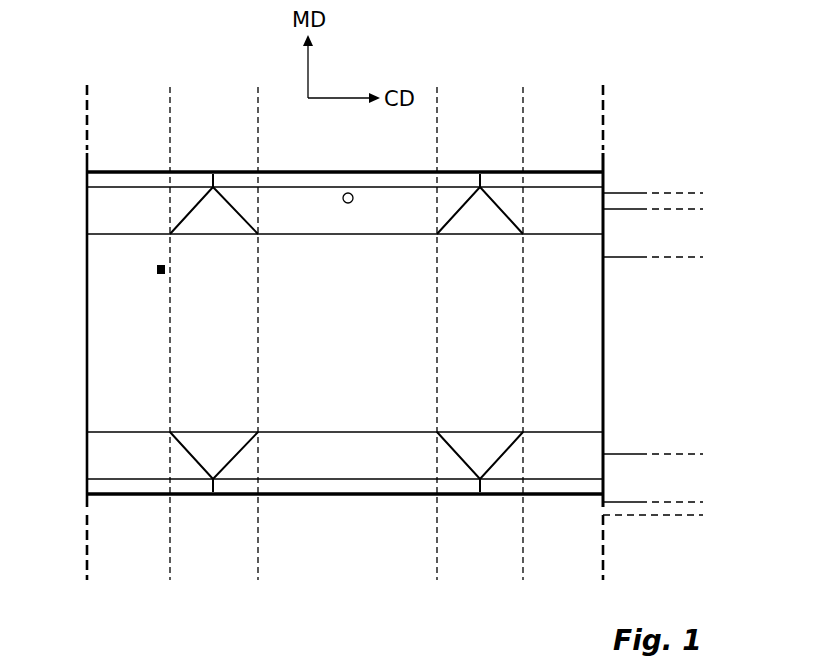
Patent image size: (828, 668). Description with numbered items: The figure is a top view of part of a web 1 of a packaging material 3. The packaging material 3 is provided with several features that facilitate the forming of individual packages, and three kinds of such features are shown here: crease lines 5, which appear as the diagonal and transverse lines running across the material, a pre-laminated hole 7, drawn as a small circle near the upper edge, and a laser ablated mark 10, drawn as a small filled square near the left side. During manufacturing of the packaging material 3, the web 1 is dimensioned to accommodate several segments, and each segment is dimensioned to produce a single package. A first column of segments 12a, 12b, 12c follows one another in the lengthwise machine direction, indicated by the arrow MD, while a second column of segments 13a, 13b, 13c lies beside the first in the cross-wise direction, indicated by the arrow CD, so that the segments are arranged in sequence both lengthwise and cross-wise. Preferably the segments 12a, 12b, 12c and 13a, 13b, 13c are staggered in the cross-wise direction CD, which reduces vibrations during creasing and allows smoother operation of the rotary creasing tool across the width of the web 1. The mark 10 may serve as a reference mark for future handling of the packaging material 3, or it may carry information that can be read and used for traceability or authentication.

The web 1 is at (652, 101).
The packaging material 3 is at (112, 143).
The crease lines 5 is at (237, 212).
The pre-laminated holes 7 is at (345, 193).
The laser ablated mark 10 is at (161, 276).
The segment 12a is at (335, 557).
The segment 12b is at (326, 407).
The segment 12c is at (236, 128).
The segment 13a is at (680, 574).
The segment 13b is at (679, 401).
The segment 13c is at (672, 181).